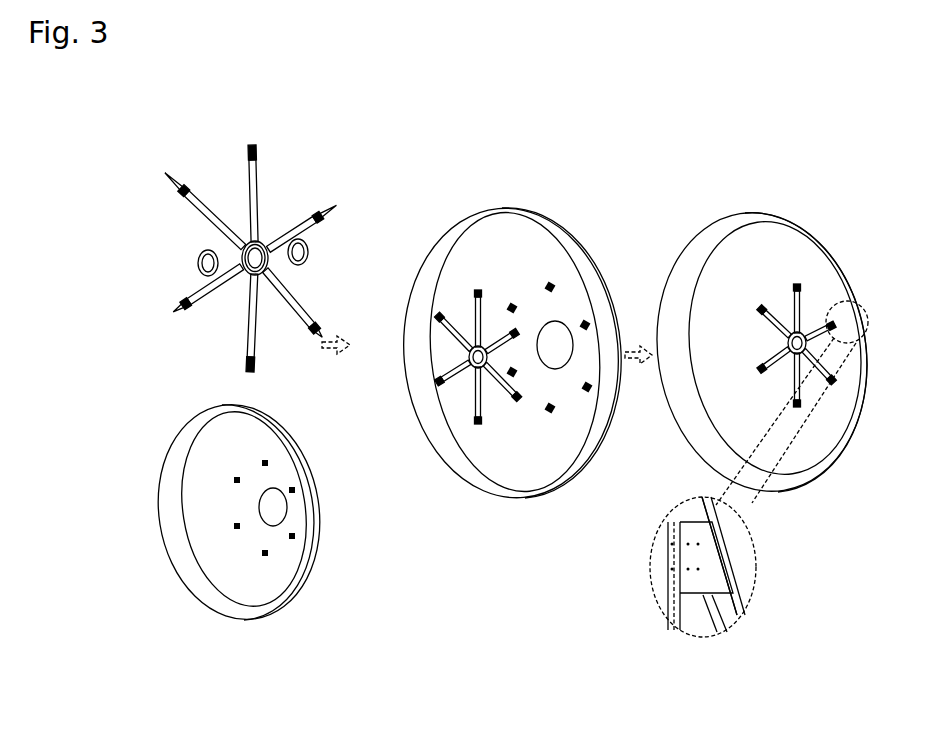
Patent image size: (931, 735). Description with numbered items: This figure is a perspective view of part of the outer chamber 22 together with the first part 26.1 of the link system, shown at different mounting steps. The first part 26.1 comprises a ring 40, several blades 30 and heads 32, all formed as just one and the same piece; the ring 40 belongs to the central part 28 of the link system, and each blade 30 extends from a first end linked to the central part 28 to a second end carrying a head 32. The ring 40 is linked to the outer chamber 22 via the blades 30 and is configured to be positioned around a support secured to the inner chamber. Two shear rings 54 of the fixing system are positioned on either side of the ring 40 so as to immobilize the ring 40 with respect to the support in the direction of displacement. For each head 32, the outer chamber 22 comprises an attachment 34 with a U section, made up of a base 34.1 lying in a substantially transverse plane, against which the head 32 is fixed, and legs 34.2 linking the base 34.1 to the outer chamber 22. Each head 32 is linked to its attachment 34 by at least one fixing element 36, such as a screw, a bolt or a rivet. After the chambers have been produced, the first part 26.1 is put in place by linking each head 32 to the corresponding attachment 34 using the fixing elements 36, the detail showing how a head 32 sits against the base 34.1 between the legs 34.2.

The outer chamber 22 is at (318, 582).
The first part of the link system 26.1 is at (222, 185).
The central part 28 is at (268, 232).
The blade 30 is at (266, 178).
The head 32 is at (248, 146).
The attachment 34 is at (584, 318).
The base 34.1 is at (702, 634).
The legs 34.2 is at (725, 608).
The fixing element 36 is at (665, 545).
The ring 40 is at (247, 277).
The shear ring 54 is at (211, 252).